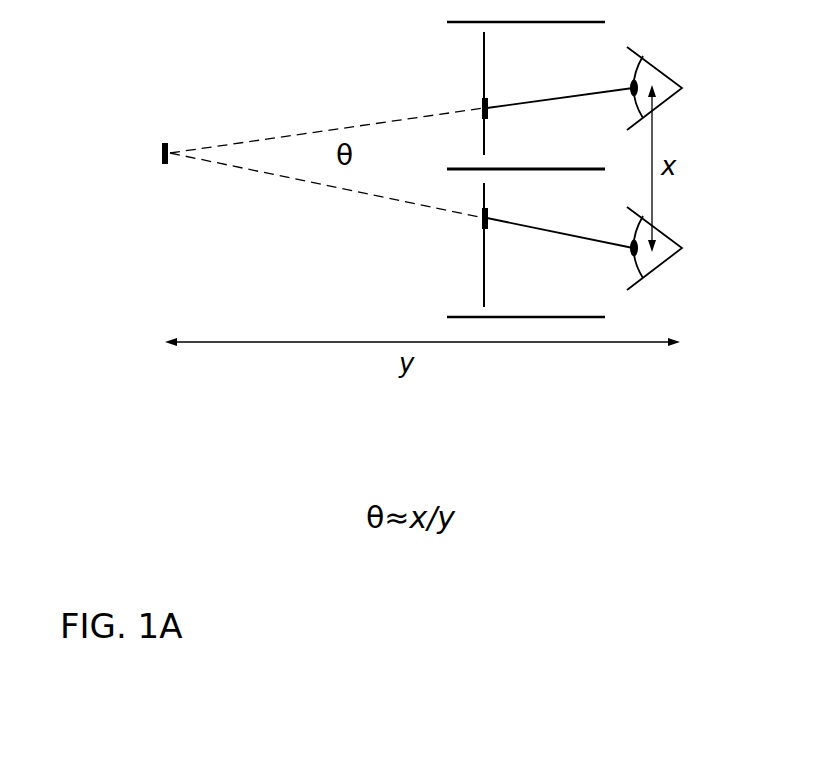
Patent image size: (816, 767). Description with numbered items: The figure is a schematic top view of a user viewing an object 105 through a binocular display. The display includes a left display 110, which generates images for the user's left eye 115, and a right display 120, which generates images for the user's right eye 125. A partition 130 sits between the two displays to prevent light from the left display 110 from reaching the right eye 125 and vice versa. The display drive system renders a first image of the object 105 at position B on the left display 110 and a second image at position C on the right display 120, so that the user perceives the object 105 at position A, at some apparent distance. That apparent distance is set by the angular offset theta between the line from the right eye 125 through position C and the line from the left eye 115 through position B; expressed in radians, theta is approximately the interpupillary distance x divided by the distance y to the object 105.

The object 105 is at (165, 165).
The left display 110 is at (467, 254).
The right display 120 is at (467, 44).
The partition 130 is at (584, 167).
The right eye 125 is at (620, 62).
The left eye 115 is at (620, 276).